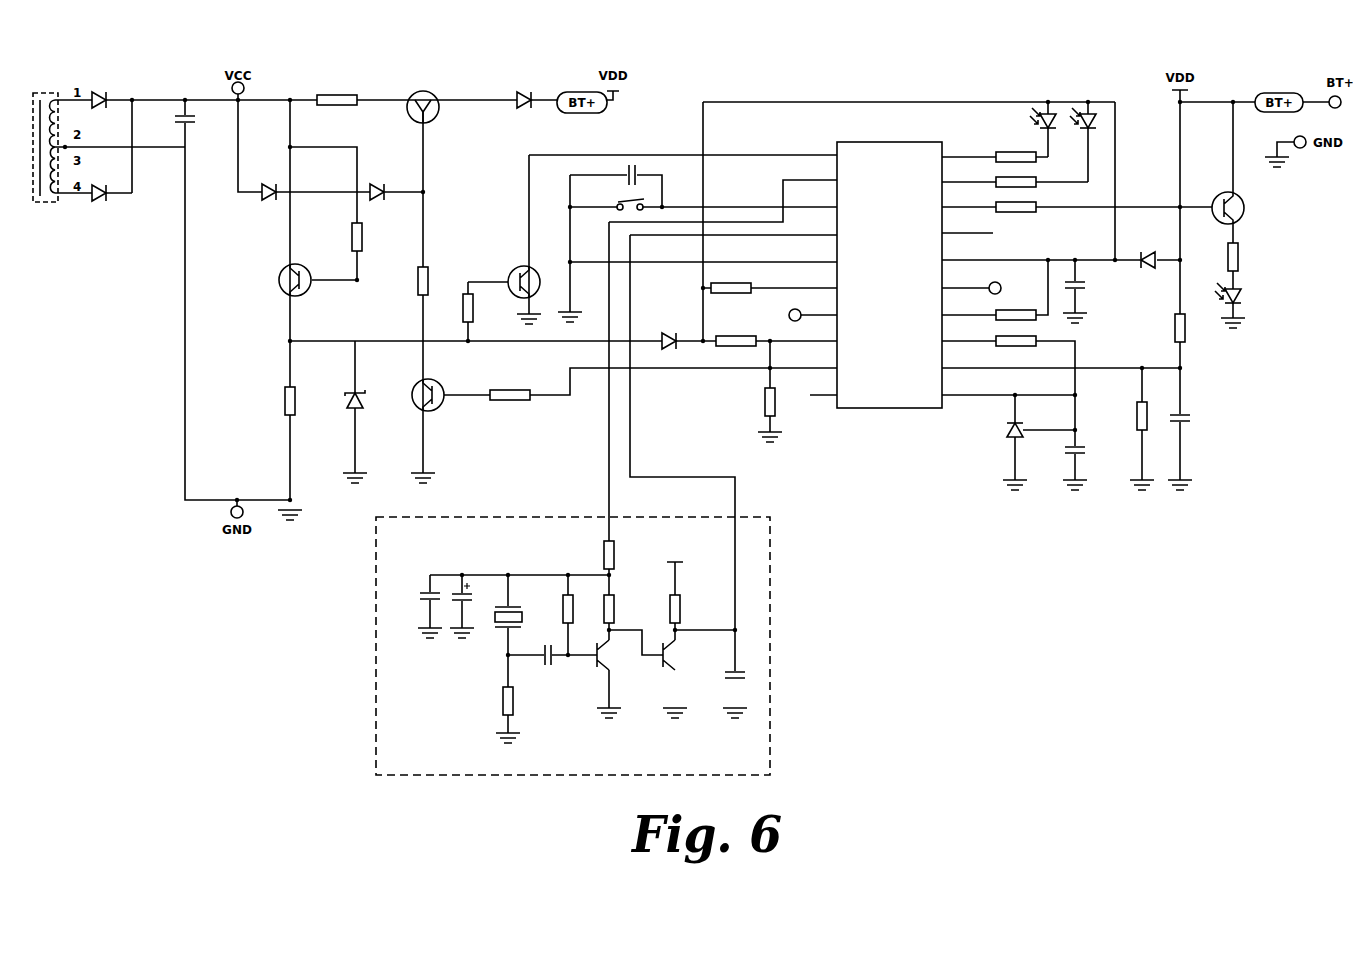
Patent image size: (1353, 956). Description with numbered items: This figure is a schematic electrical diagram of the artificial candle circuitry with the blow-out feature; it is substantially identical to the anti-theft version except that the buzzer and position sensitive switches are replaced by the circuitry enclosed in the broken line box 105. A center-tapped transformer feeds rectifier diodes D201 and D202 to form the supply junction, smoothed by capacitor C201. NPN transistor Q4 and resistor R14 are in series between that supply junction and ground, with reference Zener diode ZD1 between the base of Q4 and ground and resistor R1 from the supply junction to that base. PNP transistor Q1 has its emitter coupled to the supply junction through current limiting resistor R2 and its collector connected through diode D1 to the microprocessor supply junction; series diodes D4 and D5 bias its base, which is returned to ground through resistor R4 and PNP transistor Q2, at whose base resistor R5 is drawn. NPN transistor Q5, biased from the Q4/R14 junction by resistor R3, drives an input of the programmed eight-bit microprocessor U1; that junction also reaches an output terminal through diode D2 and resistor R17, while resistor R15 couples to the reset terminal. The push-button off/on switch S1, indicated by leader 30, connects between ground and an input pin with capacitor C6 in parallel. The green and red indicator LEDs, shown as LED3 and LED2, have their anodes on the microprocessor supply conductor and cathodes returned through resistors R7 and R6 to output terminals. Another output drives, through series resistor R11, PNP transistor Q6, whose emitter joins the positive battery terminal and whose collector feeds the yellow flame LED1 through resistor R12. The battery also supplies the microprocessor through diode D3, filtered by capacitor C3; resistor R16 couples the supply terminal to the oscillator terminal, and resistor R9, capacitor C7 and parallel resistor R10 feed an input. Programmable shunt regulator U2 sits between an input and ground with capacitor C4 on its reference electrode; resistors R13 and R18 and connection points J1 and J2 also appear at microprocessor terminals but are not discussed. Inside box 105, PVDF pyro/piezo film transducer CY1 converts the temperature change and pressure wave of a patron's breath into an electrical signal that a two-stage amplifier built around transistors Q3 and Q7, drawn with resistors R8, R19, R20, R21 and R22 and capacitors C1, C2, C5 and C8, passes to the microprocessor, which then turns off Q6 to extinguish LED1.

The switch 30 is at (637, 161).
The broken line box 105 is at (573, 646).
The programmed microprocessor U1 is at (889, 286).
The programmable shunt regulator U2 is at (1014, 436).
The push-button off/on switch S1 is at (619, 200).
The PNP transistor Q1 is at (423, 97).
The PNP transistor Q2 is at (435, 390).
The transistor Q3 is at (618, 655).
The NPN transistor Q4 is at (299, 274).
The NPN transistor Q5 is at (533, 279).
The PNP transistor Q6 is at (1240, 208).
The transistor Q7 is at (682, 655).
The resistor R1 is at (368, 237).
The current limiting resistor R2 is at (337, 92).
The biasing resistor R3 is at (479, 308).
The resistor R4 is at (411, 281).
The resistor R5 is at (510, 386).
The resistor R6 is at (1016, 190).
The resistor R7 is at (1016, 165).
The resistor R8 is at (621, 555).
The series resistor R9 is at (1169, 328).
The further resistor R10 is at (1156, 424).
The series resistor R11 is at (1016, 215).
The resistor R12 is at (1251, 257).
The resistor R13 is at (1016, 349).
The resistor R14 is at (306, 401).
The resistor R15 is at (731, 296).
The resistor R16 is at (1016, 323).
The resistor R17 is at (736, 349).
The resistor R18 is at (755, 402).
The resistor R19 is at (583, 609).
The resistor R20 is at (624, 609).
The resistor R21 is at (690, 609).
The resistor R22 is at (523, 701).
The capacitor C1 is at (421, 589).
The capacitor C2 is at (547, 665).
The capacitor C3 is at (1083, 293).
The capacitor C4 is at (1082, 453).
The debounce capacitor C5 is at (723, 678).
The capacitor C6 is at (621, 173).
The capacitor C7 is at (1192, 427).
The capacitor C8 is at (473, 592).
The smoothing capacitor C201 is at (203, 129).
The PVDF pyro/piezo film transducer CY1 is at (523, 617).
The diode D1 is at (524, 90).
The diode D2 is at (669, 331).
The diode D3 is at (1148, 272).
The diode D4 is at (269, 183).
The diode D5 is at (377, 183).
The rectifier diode D201 is at (99, 89).
The rectifier diode D202 is at (99, 206).
The reference Zener diode ZD1 is at (367, 390).
The yellow LED LED1 is at (1253, 294).
The light emitting diode LED2 is at (1115, 119).
The light emitting diode LED3 is at (1019, 119).
The jumper J1 is at (786, 316).
The jumper J2 is at (1003, 289).